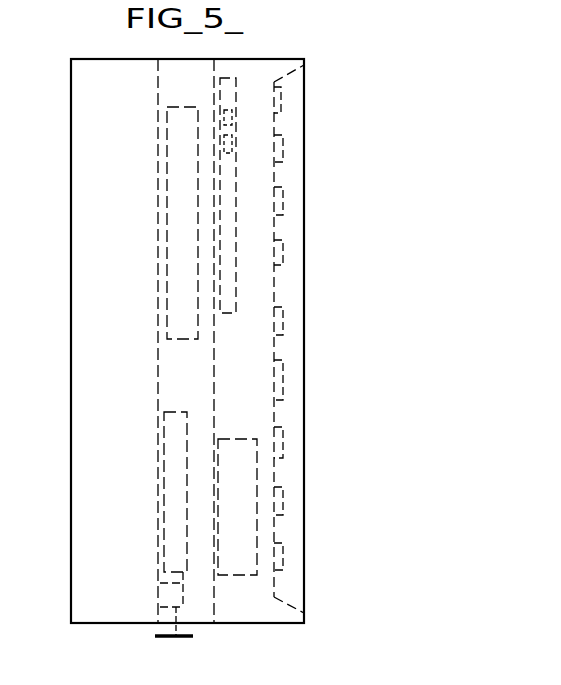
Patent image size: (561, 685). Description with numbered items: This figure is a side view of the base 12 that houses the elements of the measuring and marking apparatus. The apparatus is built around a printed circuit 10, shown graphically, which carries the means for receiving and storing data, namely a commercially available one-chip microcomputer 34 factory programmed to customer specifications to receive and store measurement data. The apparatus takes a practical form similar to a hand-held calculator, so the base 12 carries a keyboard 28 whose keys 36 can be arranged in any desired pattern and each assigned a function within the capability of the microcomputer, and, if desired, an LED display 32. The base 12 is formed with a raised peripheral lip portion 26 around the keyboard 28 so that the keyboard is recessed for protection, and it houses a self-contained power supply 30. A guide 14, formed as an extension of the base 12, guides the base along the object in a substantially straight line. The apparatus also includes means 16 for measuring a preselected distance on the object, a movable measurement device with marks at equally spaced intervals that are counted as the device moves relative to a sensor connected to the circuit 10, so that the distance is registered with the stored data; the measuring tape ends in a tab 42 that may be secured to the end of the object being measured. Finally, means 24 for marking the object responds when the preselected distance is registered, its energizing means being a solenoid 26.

The printed circuit 10 is at (233, 77).
The base 12 is at (307, 339).
The guide 14 is at (71, 152).
The means for measuring preselected distance 16 is at (113, 537).
The means for marking 24 is at (136, 266).
The solenoid 26 is at (304, 166).
The keyboard 28 is at (274, 293).
The power supply 30 is at (258, 478).
The LED display 32 is at (274, 107).
The one-chip microcomputer 34 is at (226, 107).
The keys 36 is at (276, 372).
The tab 42 is at (193, 637).